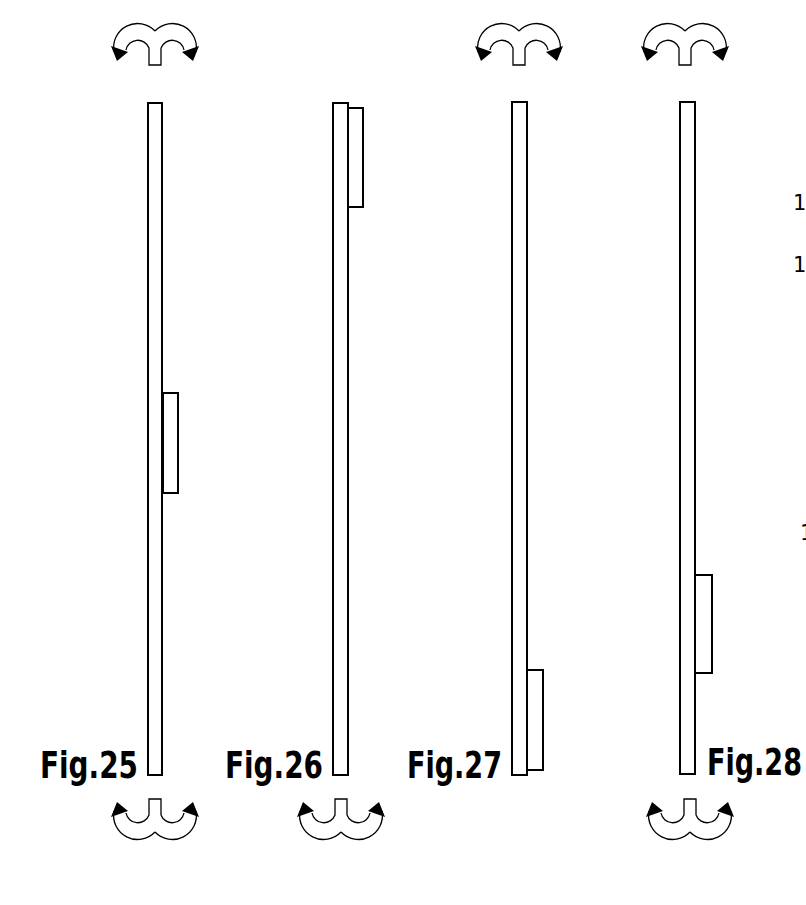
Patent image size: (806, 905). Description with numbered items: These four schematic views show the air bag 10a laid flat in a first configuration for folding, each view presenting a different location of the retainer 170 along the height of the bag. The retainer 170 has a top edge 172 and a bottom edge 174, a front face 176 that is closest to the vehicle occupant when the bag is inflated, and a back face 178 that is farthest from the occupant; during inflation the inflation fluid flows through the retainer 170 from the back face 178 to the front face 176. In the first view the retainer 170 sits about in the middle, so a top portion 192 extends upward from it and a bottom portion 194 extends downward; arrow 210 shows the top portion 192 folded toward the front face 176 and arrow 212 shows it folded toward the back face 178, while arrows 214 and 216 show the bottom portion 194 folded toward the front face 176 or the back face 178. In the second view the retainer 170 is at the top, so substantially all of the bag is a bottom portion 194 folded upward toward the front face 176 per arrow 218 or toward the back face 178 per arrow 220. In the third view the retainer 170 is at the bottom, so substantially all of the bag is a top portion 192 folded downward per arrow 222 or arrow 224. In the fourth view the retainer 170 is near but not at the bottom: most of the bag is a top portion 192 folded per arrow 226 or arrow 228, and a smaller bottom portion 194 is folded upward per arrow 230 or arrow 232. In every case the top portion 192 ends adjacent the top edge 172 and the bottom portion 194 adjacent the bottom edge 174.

In FIG. 25, the air bag 10a is at (146, 233).
In FIG. 26, the air bag 10a is at (330, 251).
In FIG. 27, the air bag 10a is at (510, 250).
In FIG. 28, the air bag 10a is at (676, 252).
In FIG. 25, the retainer 170 is at (180, 463).
In FIG. 26, the retainer 170 is at (365, 177).
In FIG. 27, the retainer 170 is at (545, 741).
In FIG. 28, the retainer 170 is at (714, 645).
In FIG. 25, the top edge 172 is at (168, 393).
In FIG. 26, the top edge 172 is at (353, 108).
In FIG. 27, the top edge 172 is at (533, 670).
In FIG. 28, the top edge 172 is at (700, 575).
In FIG. 25, the bottom edge 174 is at (168, 493).
In FIG. 26, the bottom edge 174 is at (353, 207).
In FIG. 27, the bottom edge 174 is at (533, 770).
In FIG. 28, the bottom edge 174 is at (700, 673).
In FIG. 25, the front face 176 is at (163, 452).
In FIG. 26, the front face 176 is at (348, 167).
In FIG. 27, the front face 176 is at (527, 730).
In FIG. 28, the front face 176 is at (695, 635).
In FIG. 25, the back face 178 is at (178, 430).
In FIG. 26, the back face 178 is at (363, 142).
In FIG. 27, the back face 178 is at (543, 705).
In FIG. 28, the back face 178 is at (712, 610).
In FIG. 25, the top portion 192 is at (148, 298).
In FIG. 27, the top portion 192 is at (512, 313).
In FIG. 28, the top portion 192 is at (680, 315).
In FIG. 26, the bottom portion 194 is at (333, 318).
In FIG. 28, the bottom portion 194 is at (680, 698).
In FIG. 25, the arrow 210 is at (114, 58).
In FIG. 25, the arrow 212 is at (196, 58).
In FIG. 25, the arrow 214 is at (115, 806).
In FIG. 25, the arrow 216 is at (196, 806).
In FIG. 26, the arrow 218 is at (298, 808).
In FIG. 26, the arrow 220 is at (382, 808).
In FIG. 27, the arrow 222 is at (479, 58).
In FIG. 27, the arrow 224 is at (560, 58).
In FIG. 28, the arrow 226 is at (645, 58).
In FIG. 28, the arrow 228 is at (726, 58).
In FIG. 28, the arrow 230 is at (650, 806).
In FIG. 28, the arrow 232 is at (731, 808).